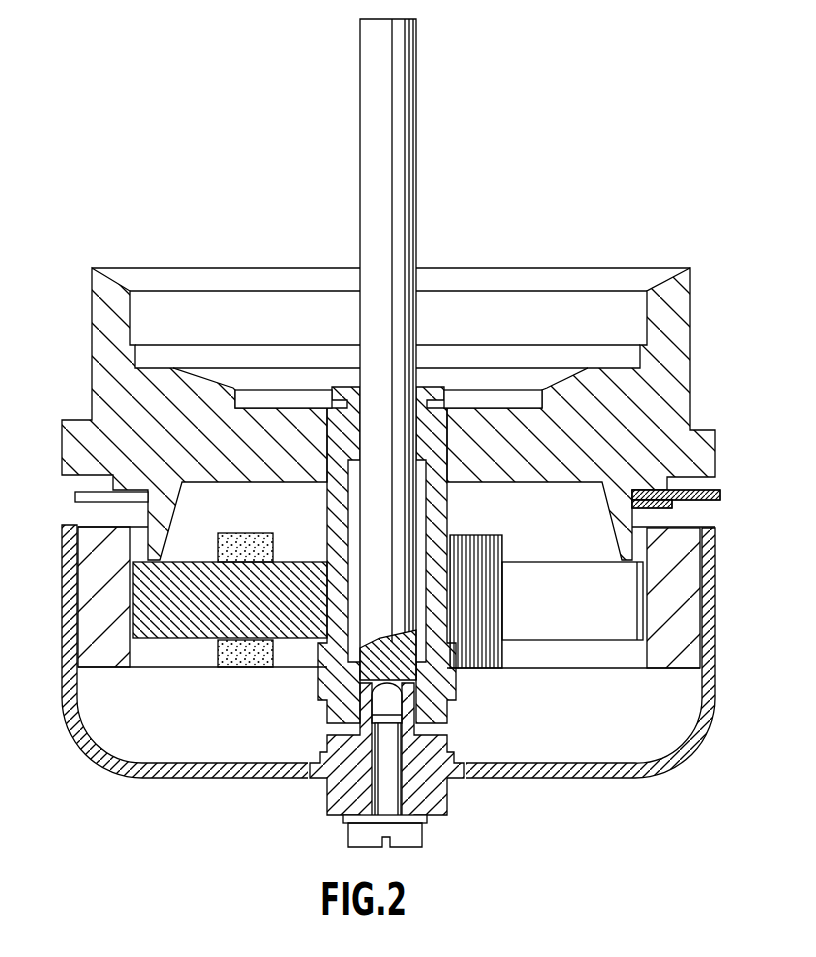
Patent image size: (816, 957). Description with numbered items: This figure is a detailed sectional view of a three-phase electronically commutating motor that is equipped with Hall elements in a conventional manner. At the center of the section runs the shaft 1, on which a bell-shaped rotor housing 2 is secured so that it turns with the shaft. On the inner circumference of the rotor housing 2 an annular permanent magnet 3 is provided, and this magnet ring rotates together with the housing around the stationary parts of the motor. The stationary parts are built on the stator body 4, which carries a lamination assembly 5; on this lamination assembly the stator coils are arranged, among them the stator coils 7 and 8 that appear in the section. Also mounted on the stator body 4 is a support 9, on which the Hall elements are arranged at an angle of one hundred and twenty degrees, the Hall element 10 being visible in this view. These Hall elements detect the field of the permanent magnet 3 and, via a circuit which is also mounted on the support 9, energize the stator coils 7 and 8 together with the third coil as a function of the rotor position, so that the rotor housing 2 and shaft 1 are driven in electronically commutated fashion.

The shaft 1 is at (403, 188).
The rotor housing 2 is at (695, 756).
The permanent magnet 3 is at (690, 656).
The stator body 4 is at (690, 453).
The lamination assembly 5 is at (288, 580).
The stator coil 7 is at (472, 553).
The stator coil 8 is at (236, 545).
The support 9 is at (720, 496).
The Hall element 10 is at (672, 506).